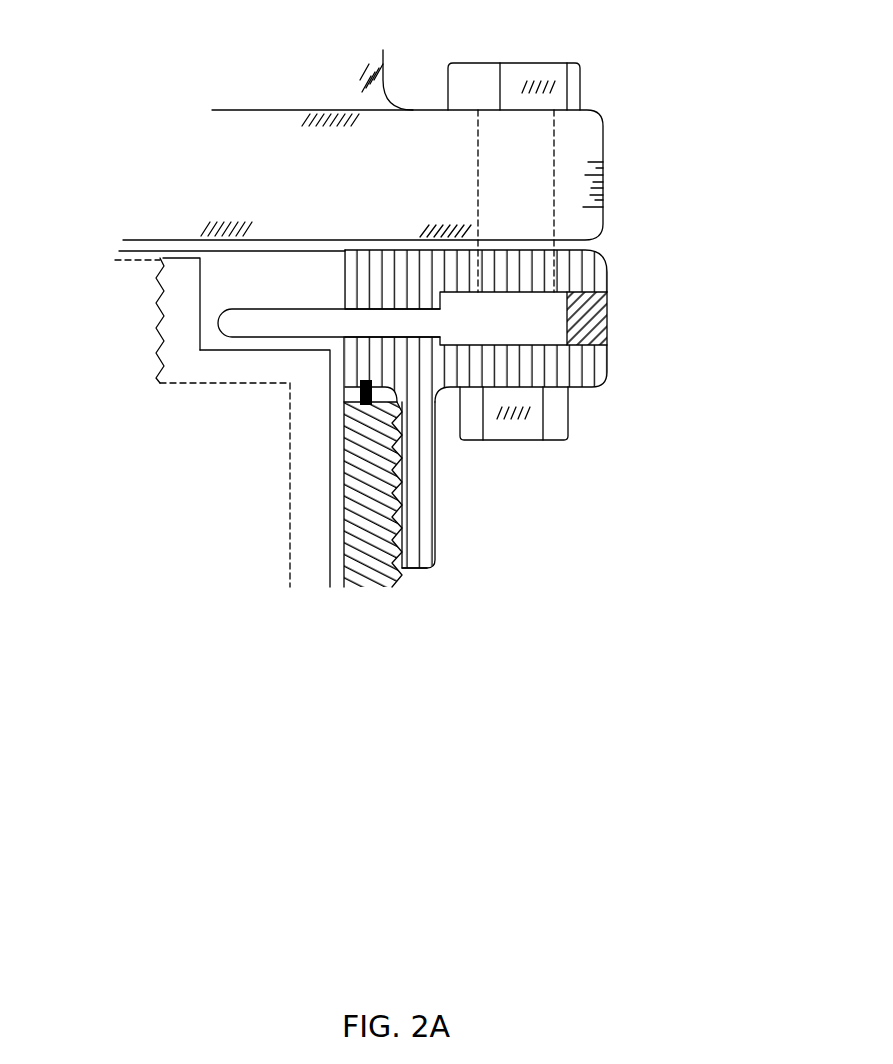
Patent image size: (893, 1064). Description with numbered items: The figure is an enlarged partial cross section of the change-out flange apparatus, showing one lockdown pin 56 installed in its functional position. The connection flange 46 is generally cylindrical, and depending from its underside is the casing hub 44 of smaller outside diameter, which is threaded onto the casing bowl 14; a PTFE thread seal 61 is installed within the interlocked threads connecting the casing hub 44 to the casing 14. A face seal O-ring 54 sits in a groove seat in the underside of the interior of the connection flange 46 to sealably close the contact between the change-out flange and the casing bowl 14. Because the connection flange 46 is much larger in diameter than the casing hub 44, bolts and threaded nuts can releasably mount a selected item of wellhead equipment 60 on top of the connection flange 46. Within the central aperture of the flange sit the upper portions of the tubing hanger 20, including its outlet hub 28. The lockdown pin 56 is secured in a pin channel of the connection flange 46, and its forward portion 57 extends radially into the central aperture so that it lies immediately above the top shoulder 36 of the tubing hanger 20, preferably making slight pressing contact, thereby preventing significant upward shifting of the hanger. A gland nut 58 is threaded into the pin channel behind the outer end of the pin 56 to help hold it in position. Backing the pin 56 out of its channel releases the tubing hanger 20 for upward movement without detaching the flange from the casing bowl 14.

The wellhead equipment 60 is at (287, 72).
The outlet hub 28 is at (177, 286).
The forward portion 57 is at (227, 325).
The top shoulder 36 is at (227, 353).
The face seal O-ring 54 is at (358, 405).
The tubing hanger 20 is at (302, 497).
The casing bowl 14 is at (345, 538).
The casing hub 44 is at (427, 505).
The PTFE thread seal 61 is at (400, 543).
The lockdown pin 56 is at (552, 313).
The gland nut 58 is at (582, 303).
The connection flange 46 is at (582, 369).